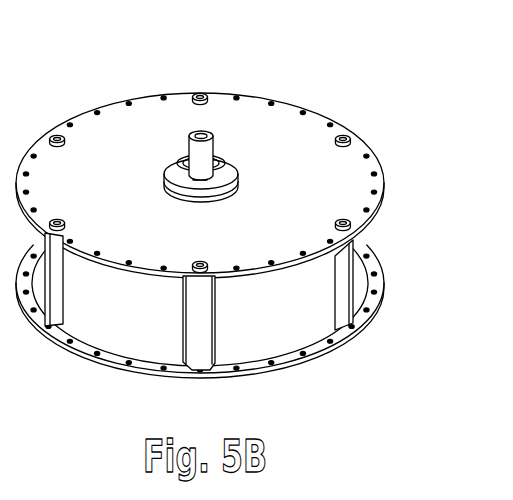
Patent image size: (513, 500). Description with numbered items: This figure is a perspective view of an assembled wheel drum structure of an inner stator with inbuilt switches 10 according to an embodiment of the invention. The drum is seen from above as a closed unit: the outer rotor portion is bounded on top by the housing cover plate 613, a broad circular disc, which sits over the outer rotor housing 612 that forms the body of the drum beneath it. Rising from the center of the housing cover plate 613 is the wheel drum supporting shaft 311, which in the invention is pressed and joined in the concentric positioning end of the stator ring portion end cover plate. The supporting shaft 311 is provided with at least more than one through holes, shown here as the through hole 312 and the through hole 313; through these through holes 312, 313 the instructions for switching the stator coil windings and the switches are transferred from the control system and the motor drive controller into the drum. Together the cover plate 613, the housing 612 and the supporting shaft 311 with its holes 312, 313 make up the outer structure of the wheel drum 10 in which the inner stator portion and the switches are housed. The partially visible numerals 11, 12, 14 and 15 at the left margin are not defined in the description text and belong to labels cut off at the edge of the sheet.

The wheel drum structure of an inner stator with inbuilt switches 10 is at (404, 140).
The wheel drum supporting shaft 311 is at (196, 150).
The through hole 312 is at (200, 133).
The through hole 313 is at (208, 183).
The housing cover plate 613 is at (279, 123).
The outer rotor housing 612 is at (304, 317).
The component 11 is at (11, 239).
The component 12 is at (11, 126).
The component 14 is at (11, 481).
The component 15 is at (11, 364).